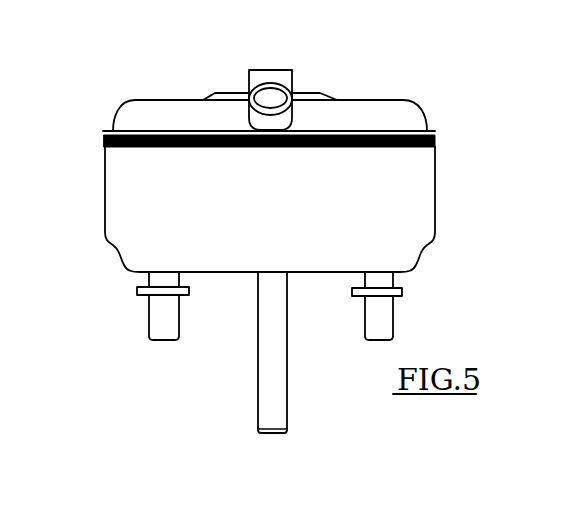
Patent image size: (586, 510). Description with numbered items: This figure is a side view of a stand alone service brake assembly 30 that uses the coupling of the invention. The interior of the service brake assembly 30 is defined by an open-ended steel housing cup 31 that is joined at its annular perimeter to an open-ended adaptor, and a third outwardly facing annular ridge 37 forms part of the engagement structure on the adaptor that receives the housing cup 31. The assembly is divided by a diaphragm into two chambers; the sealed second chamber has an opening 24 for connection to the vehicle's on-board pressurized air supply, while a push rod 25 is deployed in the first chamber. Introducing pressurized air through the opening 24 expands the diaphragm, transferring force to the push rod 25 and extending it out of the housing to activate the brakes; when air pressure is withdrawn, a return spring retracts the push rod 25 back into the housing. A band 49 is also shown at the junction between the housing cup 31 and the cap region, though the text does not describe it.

The service brake assembly 30 is at (70, 188).
The housing cup 31 is at (417, 195).
The third outwardly facing annular ridge 37 is at (437, 134).
The seal band 49 is at (436, 145).
The opening 24 is at (281, 86).
The push rod 25 is at (272, 350).